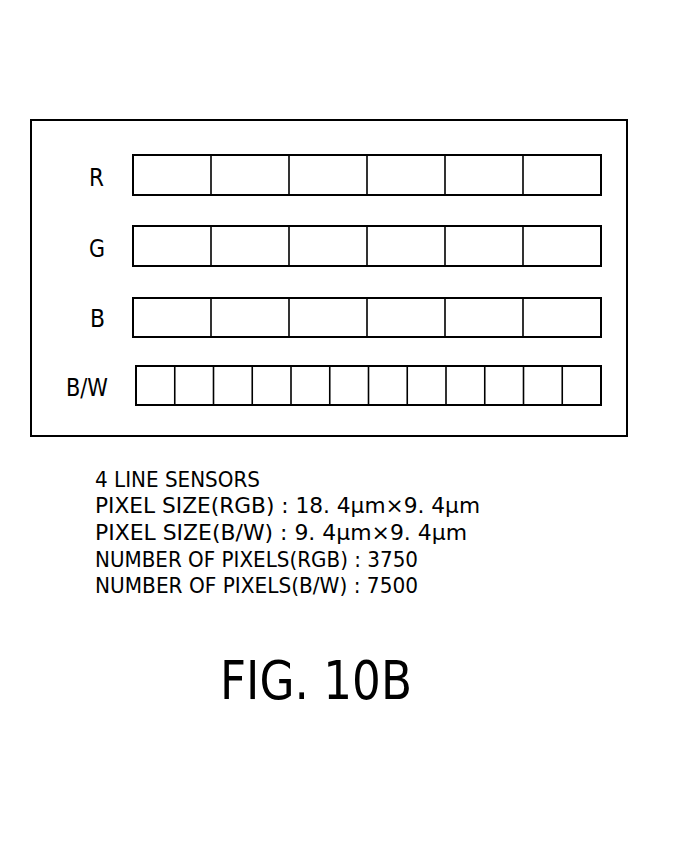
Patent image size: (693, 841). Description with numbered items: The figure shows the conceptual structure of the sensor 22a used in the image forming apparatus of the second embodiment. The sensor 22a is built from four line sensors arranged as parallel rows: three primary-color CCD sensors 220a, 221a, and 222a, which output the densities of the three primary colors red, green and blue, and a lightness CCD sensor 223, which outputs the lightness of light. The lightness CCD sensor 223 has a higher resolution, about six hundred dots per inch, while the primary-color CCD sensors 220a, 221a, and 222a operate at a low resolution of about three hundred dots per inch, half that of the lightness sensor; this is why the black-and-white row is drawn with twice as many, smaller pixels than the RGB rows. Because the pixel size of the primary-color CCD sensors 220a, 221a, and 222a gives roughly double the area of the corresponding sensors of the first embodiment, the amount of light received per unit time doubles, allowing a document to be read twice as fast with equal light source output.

The sensor 22a is at (404, 118).
The primary-color CCD sensor 220a is at (601, 173).
The primary-color CCD sensor 221a is at (601, 244).
The primary-color CCD sensor 222a is at (601, 316).
The lightness CCD sensor 223 is at (601, 383).